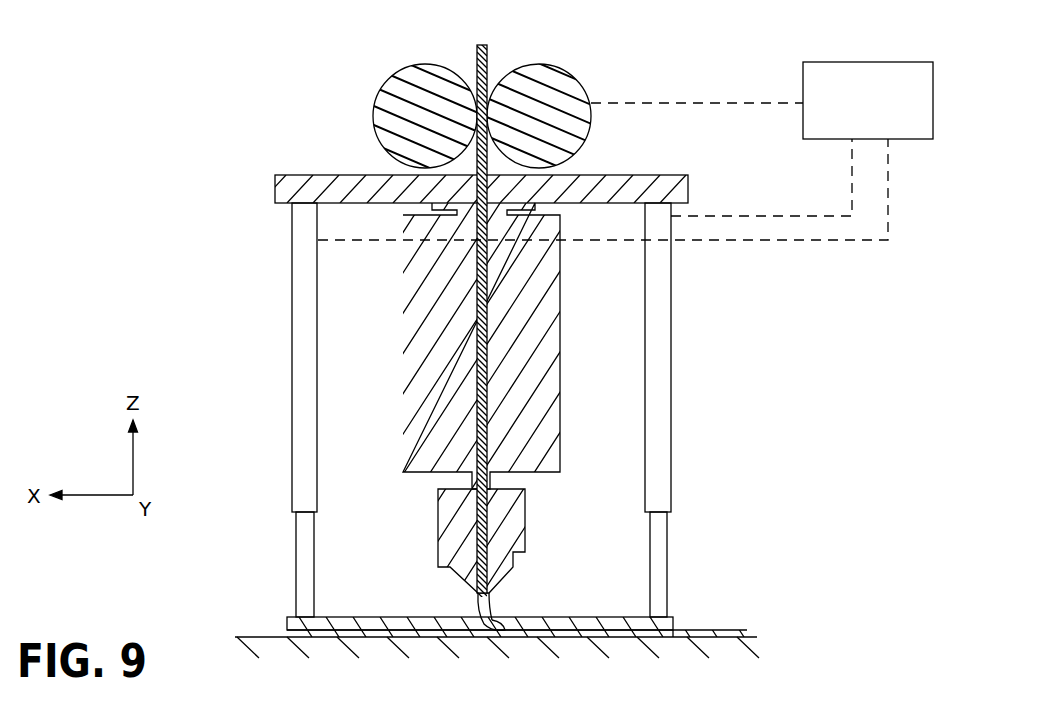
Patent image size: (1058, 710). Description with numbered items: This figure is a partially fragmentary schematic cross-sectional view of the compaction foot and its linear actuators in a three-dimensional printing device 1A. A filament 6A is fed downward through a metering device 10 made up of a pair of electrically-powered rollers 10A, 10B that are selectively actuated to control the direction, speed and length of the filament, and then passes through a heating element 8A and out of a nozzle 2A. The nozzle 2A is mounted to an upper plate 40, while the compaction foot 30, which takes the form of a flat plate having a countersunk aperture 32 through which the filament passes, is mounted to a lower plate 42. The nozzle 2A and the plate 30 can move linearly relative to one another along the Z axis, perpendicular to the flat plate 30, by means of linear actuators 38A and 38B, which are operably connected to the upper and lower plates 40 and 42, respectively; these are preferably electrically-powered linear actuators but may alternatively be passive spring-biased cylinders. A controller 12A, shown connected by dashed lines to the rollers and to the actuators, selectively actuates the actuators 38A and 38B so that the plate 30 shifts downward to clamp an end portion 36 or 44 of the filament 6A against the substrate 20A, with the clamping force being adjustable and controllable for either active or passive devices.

The 3D printing device 1A is at (523, 348).
The nozzle 2A is at (508, 583).
The filament 6A is at (493, 57).
The heater block 8A is at (562, 366).
The metering device 10 is at (473, 114).
The electrically-powered roller 10A is at (379, 98).
The electrically-powered roller 10B is at (580, 86).
The controller 12A is at (833, 62).
The substrate 20A is at (262, 634).
The compaction foot 30 is at (402, 615).
The countersunk aperture 32 is at (497, 623).
The end portion of filament 36 is at (618, 638).
The powered actuator 38A is at (290, 410).
The powered actuator 38B is at (673, 357).
The upper plate 40 is at (640, 175).
The lower plate 42 is at (673, 617).
The end portion of filament 44 is at (718, 629).